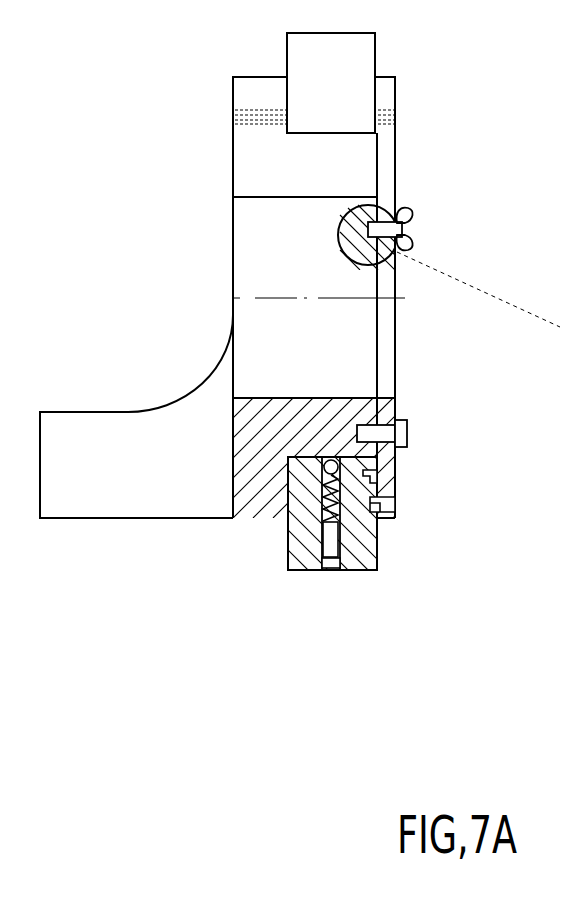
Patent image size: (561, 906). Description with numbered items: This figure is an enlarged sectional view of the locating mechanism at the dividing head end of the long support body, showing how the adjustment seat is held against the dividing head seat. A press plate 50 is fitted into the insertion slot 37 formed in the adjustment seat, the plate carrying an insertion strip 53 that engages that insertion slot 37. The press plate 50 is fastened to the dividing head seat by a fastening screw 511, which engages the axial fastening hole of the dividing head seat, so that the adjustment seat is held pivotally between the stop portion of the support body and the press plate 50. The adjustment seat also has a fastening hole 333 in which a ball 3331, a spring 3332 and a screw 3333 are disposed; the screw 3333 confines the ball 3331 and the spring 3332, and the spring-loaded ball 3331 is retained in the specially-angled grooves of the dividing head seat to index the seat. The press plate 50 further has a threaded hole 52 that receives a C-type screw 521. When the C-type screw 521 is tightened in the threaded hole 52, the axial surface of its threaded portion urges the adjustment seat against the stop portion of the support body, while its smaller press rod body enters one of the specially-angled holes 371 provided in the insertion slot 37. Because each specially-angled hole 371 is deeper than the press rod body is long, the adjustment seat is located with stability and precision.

The insertion slot 37 is at (227, 480).
The press plate 50 is at (397, 398).
The threaded hole 52 is at (397, 505).
The insertion strip 53 is at (397, 454).
The fastening hole 333 is at (363, 571).
The specially-angled hole 371 is at (378, 528).
The fastening screw 511 is at (408, 426).
The C-type screw 521 is at (399, 216).
The ball 3331 is at (322, 460).
The spring 3332 is at (378, 537).
The screw 3333 is at (305, 532).